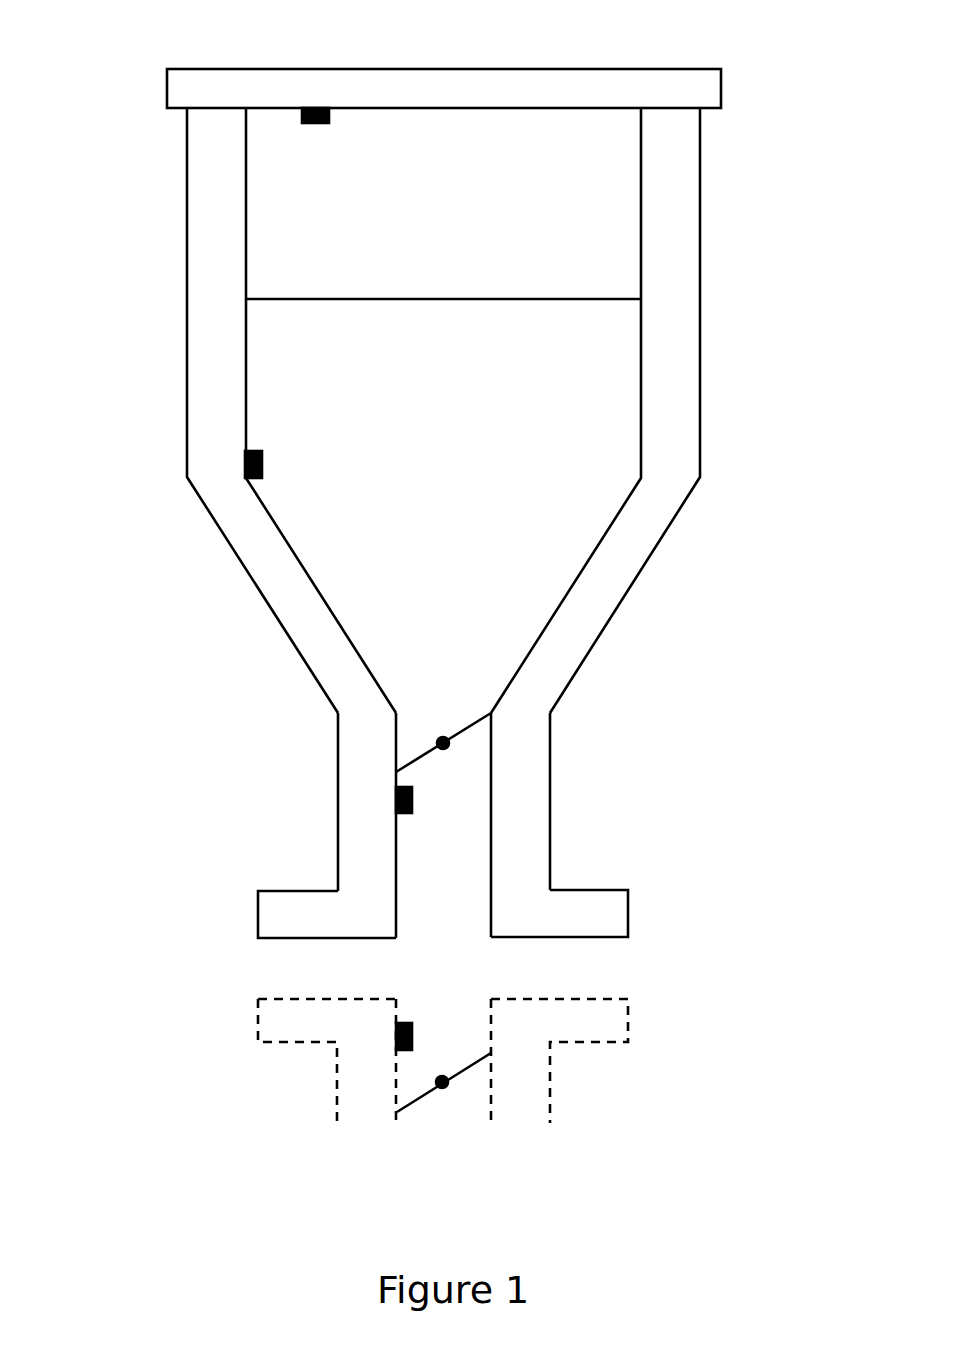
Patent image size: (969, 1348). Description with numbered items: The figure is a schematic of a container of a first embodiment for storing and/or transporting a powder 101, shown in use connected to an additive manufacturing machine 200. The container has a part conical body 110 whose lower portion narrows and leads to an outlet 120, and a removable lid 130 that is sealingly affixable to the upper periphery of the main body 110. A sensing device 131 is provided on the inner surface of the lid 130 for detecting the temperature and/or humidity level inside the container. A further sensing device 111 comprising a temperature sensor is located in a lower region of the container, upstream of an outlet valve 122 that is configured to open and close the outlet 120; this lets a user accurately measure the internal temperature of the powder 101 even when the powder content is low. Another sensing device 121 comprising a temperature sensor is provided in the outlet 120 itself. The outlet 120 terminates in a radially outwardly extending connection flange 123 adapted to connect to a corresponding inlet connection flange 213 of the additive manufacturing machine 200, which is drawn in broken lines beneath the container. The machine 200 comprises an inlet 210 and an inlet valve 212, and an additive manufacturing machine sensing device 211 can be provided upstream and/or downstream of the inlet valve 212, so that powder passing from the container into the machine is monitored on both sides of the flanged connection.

The powder 101 is at (473, 418).
The part conical body 110 is at (555, 684).
The further sensing device 111 is at (245, 463).
The outlet 120 is at (535, 862).
The sensing device 121 is at (396, 797).
The outlet valve 122 is at (470, 728).
The connection flange 123 is at (612, 914).
The removable lid 130 is at (538, 69).
The sensing device 131 is at (312, 108).
The additive manufacturing machine 200 is at (455, 1060).
The inlet 210 is at (337, 1083).
The additive manufacturing machine sensing device 211 is at (400, 1023).
The inlet valve 212 is at (491, 1066).
The inlet connection flange 213 is at (630, 1020).